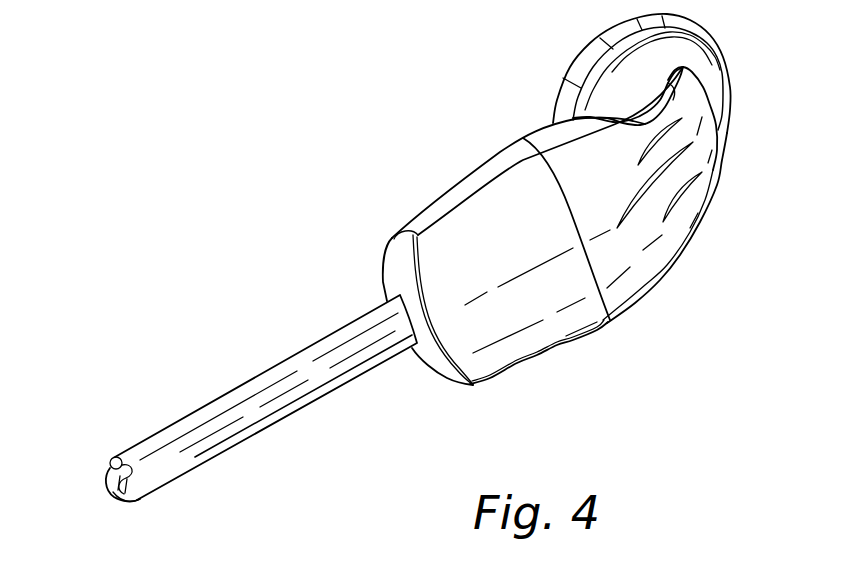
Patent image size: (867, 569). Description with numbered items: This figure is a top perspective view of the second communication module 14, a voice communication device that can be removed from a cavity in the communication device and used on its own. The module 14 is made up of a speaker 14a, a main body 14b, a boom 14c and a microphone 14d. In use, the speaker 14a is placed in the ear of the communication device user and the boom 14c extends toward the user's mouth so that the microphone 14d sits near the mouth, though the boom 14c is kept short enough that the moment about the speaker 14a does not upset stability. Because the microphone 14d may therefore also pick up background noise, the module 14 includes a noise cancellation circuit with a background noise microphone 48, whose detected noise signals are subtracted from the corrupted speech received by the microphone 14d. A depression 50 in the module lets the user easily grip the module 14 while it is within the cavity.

The second communication module 14 is at (436, 258).
The speaker 14a is at (752, 83).
The main body 14b is at (466, 152).
The boom 14c is at (248, 342).
The microphone 14d is at (72, 478).
The background noise microphone 48 is at (706, 197).
The depression 50 is at (640, 108).